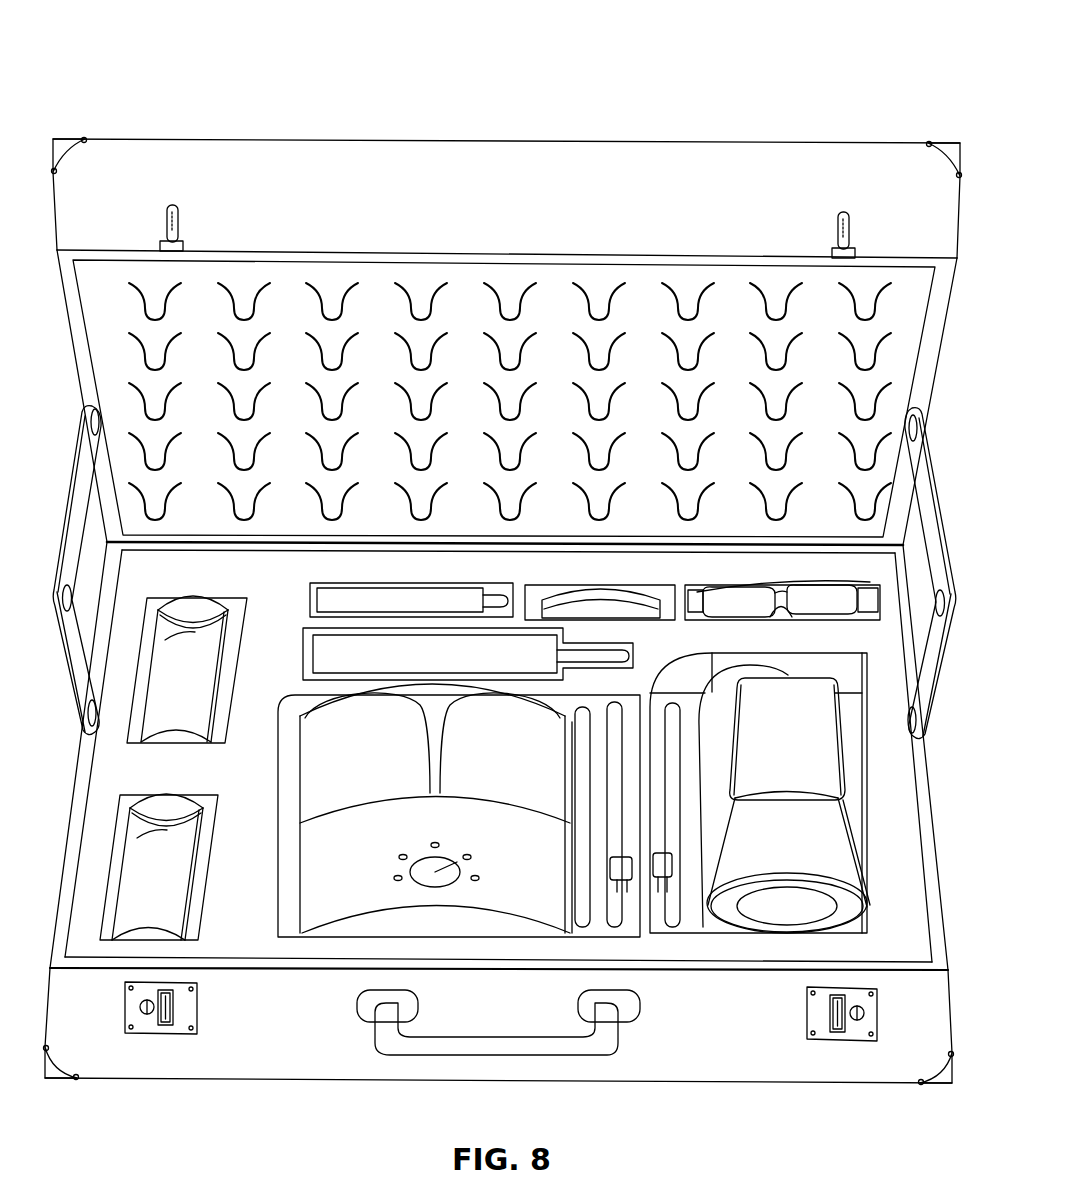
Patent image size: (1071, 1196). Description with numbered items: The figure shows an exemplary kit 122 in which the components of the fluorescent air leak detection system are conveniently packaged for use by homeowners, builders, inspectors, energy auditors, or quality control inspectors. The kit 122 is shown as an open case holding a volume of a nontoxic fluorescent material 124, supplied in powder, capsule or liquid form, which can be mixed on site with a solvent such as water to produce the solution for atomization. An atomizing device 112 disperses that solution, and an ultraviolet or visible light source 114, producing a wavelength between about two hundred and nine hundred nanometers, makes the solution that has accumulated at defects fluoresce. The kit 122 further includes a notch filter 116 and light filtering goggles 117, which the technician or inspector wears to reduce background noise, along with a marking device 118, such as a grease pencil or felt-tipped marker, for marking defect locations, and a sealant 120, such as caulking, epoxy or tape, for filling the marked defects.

The atomizing device 112 is at (338, 877).
The ultraviolet or visible light source 114 is at (800, 838).
The notch filter 116 is at (603, 605).
The light filtering goggles 117 is at (750, 608).
The marking device 118 is at (345, 600).
The sealant 120 is at (385, 662).
The kit 122 is at (785, 90).
The nontoxic fluorescent material 124 is at (183, 877).